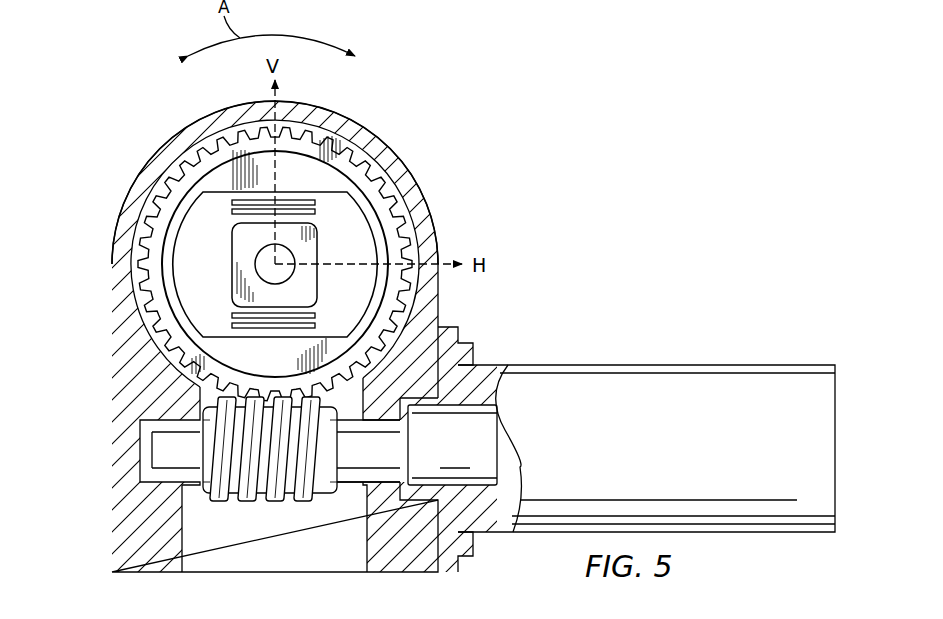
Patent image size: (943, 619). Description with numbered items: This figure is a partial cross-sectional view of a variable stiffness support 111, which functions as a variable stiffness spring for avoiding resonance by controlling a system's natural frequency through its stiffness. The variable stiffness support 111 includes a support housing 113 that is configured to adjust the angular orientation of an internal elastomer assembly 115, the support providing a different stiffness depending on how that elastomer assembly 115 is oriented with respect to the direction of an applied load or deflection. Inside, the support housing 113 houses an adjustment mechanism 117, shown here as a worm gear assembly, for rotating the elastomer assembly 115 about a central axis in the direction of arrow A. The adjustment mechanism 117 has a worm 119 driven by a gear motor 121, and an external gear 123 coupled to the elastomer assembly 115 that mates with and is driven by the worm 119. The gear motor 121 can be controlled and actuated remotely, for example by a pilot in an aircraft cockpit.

The variable stiffness support 111 is at (117, 167).
The support housing 113 is at (426, 206).
The elastomer assembly 115 is at (206, 166).
The adjustment mechanism 117 is at (276, 482).
The worm 119 is at (277, 500).
The gear motor 121 is at (694, 365).
The external gear 123 is at (275, 255).